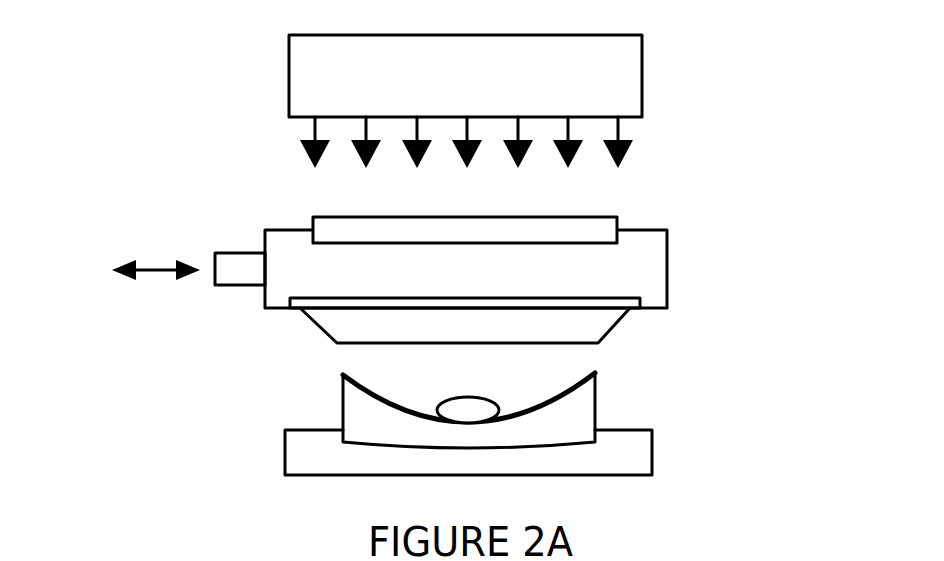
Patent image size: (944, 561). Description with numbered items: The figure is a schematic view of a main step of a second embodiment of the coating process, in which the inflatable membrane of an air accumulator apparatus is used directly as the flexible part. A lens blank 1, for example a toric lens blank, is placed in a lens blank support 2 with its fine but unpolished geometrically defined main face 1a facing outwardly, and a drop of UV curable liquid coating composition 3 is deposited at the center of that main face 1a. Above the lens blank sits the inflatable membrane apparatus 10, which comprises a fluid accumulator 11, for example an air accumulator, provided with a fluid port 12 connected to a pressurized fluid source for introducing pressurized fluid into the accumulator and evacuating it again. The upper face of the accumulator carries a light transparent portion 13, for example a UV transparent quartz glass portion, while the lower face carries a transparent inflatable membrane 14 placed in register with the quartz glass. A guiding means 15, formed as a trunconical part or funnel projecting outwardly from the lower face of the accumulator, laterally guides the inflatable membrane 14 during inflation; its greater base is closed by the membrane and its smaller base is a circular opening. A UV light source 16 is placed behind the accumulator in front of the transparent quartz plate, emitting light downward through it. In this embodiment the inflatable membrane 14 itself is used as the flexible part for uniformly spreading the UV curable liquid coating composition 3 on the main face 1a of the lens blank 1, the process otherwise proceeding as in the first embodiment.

The lens blank 1 is at (597, 403).
The geometrically defined main face 1a is at (364, 388).
The lens blank support 2 is at (283, 438).
The UV curable liquid coating composition 3 is at (497, 404).
The inflatable membrane apparatus 10 is at (438, 242).
The fluid accumulator 11 is at (282, 240).
The fluid port 12 is at (213, 254).
The light transparent portion 13 is at (619, 218).
The transparent inflatable membrane 14 is at (640, 300).
The guiding means 15 is at (320, 328).
The UV light source 16 is at (643, 62).